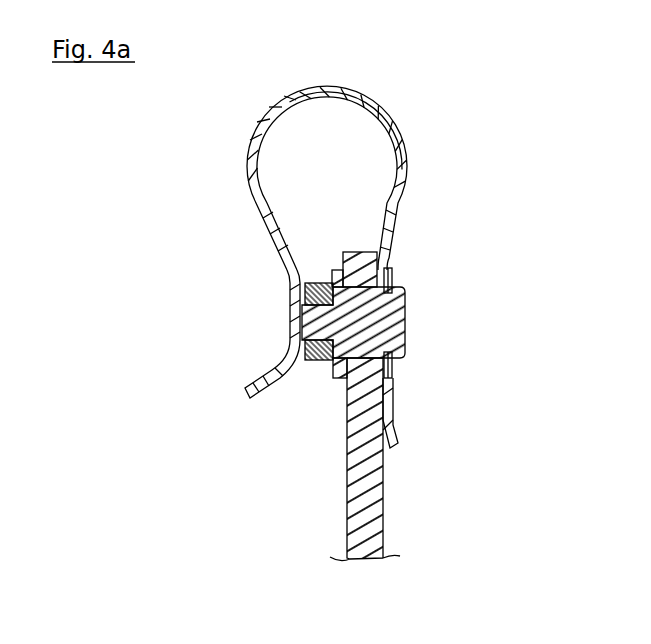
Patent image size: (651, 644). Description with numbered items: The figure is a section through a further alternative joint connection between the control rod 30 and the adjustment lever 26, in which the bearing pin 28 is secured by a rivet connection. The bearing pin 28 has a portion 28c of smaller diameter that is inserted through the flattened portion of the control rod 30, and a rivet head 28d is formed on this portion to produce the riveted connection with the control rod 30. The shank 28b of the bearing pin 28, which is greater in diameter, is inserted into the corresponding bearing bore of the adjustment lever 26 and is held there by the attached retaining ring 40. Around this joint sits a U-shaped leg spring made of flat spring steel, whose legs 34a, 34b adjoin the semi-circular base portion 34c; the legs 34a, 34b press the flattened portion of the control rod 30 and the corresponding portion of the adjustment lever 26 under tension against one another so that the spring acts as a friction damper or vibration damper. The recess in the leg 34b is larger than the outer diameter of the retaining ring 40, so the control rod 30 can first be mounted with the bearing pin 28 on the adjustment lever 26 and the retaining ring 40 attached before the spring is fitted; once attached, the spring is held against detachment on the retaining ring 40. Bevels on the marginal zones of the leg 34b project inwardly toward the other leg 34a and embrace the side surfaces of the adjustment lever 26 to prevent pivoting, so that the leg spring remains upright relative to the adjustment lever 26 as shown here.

The adjustment lever 26 is at (347, 472).
The bearing pin 28 is at (409, 297).
The shank 28b is at (387, 264).
The portion of smaller diameter 28c is at (300, 348).
The rivet head 28d is at (296, 308).
The control rod 30 is at (314, 366).
The leg 34a is at (258, 213).
The leg 34b is at (398, 415).
The semi-circular base portion 34c is at (318, 86).
The retaining ring 40 is at (395, 371).